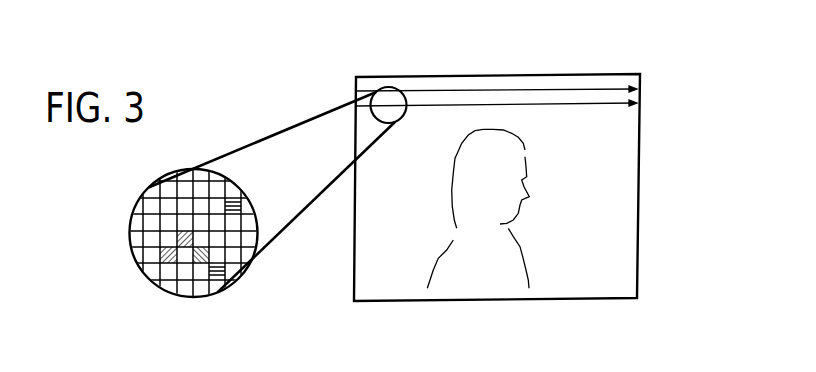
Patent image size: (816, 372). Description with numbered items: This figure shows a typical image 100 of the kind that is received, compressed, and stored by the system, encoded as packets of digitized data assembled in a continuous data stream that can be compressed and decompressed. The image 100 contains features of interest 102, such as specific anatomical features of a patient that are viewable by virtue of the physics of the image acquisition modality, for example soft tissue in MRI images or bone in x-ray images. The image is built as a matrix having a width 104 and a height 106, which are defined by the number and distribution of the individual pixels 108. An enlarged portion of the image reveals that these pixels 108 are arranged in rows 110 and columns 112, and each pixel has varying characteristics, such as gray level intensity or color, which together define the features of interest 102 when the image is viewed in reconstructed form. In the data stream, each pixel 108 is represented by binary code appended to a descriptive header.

The image 100 is at (313, 303).
The features of interest 102 is at (548, 287).
The width 104 is at (640, 58).
The height 106 is at (655, 74).
The pixels 108 is at (153, 237).
The rows 110 is at (157, 230).
The columns 112 is at (168, 168).